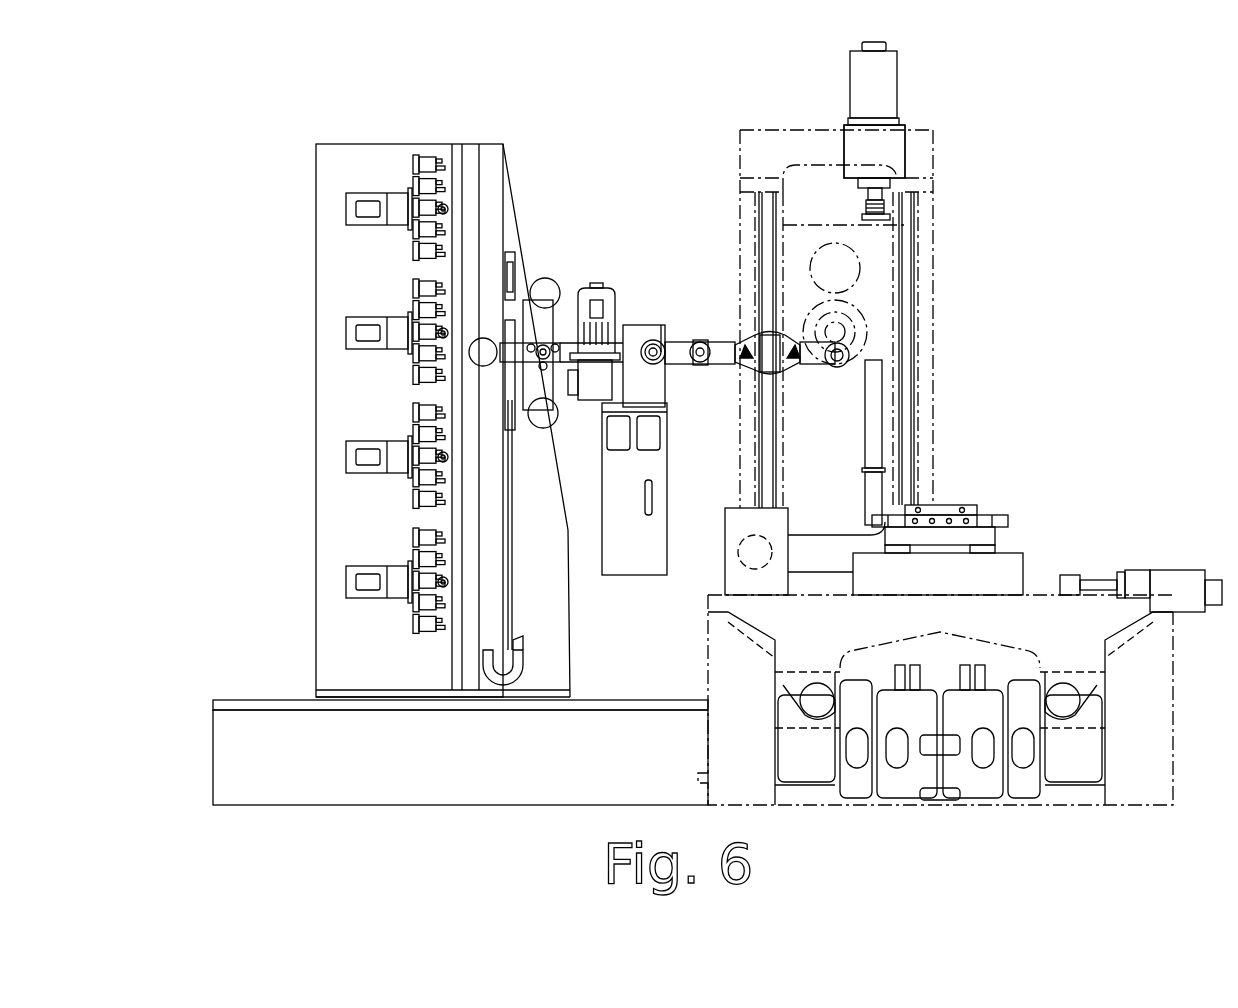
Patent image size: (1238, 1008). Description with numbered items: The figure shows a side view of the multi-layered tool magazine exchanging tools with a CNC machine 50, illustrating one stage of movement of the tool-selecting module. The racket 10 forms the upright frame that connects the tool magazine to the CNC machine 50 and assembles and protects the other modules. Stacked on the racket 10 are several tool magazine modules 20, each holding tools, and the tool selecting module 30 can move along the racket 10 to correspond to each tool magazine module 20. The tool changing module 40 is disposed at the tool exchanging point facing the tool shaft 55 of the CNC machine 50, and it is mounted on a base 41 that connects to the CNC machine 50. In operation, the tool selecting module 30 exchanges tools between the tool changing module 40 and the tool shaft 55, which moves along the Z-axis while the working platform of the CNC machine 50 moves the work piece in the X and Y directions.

The racket 10 is at (470, 143).
The tool magazine module 20 is at (400, 173).
The tool selecting module 30 is at (508, 243).
The tool changing module 40 is at (665, 324).
The base 41 is at (668, 455).
The CNC machine 50 is at (986, 458).
The tool shaft 55 is at (905, 283).